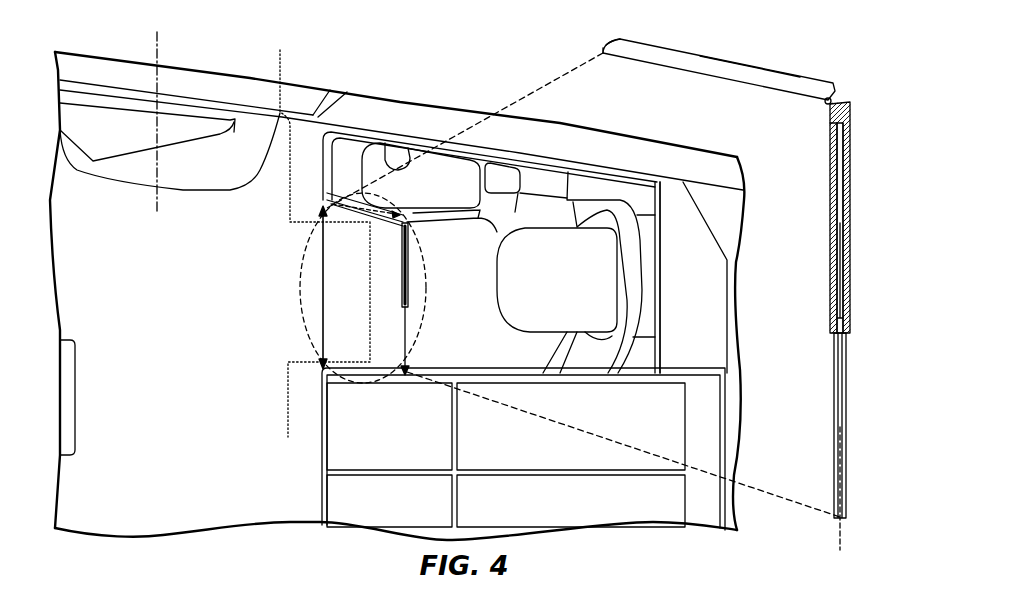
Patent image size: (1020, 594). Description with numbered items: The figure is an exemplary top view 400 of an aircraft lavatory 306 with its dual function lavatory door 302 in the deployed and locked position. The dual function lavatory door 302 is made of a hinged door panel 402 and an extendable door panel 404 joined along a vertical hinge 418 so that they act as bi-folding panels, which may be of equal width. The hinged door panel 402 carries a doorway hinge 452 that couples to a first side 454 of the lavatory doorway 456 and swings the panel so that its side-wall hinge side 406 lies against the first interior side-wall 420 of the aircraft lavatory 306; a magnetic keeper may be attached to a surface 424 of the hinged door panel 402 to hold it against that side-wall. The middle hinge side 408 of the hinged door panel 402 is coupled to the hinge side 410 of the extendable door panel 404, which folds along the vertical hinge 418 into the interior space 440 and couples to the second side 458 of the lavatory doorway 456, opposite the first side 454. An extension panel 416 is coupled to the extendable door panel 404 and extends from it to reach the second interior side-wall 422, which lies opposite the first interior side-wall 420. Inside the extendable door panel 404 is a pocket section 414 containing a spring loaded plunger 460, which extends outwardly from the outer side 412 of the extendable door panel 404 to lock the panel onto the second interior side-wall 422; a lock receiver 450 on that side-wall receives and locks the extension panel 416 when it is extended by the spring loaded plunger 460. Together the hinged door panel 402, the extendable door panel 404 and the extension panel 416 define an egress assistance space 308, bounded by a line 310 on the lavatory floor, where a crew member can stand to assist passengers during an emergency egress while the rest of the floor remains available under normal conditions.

The top view 400 is at (197, 36).
The dual function lavatory door 302 is at (413, 265).
The aircraft lavatory 306 is at (662, 292).
The egress assistance space 308 is at (340, 290).
The line 310 is at (287, 413).
The hinged door panel 402 is at (347, 213).
The extendable door panel 404 is at (398, 225).
The side-wall hinge side 406 is at (603, 50).
The middle hinge side 408 is at (833, 100).
The hinge side 410 is at (851, 102).
The outer side 412 is at (832, 335).
The pocket section 414 is at (838, 200).
The extension panel 416 is at (412, 325).
The vertical hinge 418 is at (825, 104).
The first interior side-wall 420 is at (406, 214).
The second interior side-wall 422 is at (437, 372).
The surface 424 is at (757, 65).
The interior space 440 is at (482, 310).
The lock receiver 450 is at (406, 375).
The doorway hinge 452 is at (622, 38).
The first side 454 is at (321, 213).
The lavatory doorway 456 is at (322, 308).
The second side 458 is at (321, 362).
The spring loaded plunger 460 is at (839, 253).